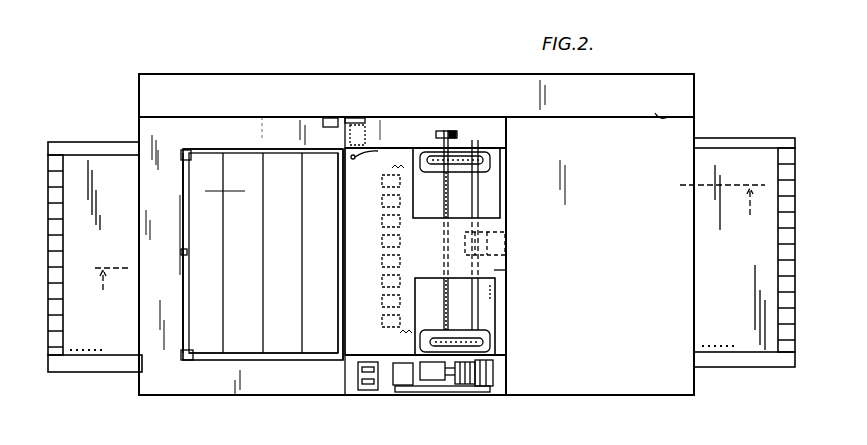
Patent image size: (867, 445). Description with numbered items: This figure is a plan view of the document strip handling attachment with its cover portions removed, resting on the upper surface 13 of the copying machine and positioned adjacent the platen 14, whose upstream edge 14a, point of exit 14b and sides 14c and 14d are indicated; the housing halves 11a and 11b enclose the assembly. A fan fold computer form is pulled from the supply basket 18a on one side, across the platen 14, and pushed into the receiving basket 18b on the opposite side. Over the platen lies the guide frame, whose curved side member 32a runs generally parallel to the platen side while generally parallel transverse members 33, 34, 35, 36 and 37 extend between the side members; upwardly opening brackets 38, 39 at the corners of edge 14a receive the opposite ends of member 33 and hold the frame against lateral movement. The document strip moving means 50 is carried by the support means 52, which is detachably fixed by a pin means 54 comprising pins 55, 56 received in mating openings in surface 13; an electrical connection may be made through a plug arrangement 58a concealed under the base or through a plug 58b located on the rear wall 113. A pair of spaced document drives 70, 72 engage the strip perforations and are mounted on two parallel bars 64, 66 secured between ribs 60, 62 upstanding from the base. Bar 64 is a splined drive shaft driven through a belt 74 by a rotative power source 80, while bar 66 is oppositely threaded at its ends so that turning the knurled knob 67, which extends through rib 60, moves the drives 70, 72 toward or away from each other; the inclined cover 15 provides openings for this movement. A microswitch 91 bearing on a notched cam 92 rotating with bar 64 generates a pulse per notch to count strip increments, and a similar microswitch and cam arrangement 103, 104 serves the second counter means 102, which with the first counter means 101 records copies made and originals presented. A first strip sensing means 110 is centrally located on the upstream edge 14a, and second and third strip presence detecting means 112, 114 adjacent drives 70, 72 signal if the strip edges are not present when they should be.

The upper housing portion 11a is at (416, 234).
The lower housing portion 11b is at (575, 322).
The upper surface 13 is at (672, 370).
The platen 14 is at (292, 249).
The upstream edge 14a is at (183, 196).
The point of exit 14b is at (332, 178).
The platen side 14c is at (262, 117).
The platen side 14d is at (245, 352).
The cover 15 is at (427, 256).
The supply basket 18a is at (78, 372).
The basket 18b is at (714, 367).
The side member 32a is at (230, 117).
The transverse member 33 is at (185, 316).
The transverse member 34 is at (223, 340).
The transverse member 35 is at (263, 340).
The transverse member 36 is at (302, 340).
The transverse member 37 is at (340, 340).
The bracket 38 is at (181, 156).
The bracket 39 is at (181, 353).
The document strip moving means 50 is at (507, 273).
The support means 52 is at (505, 245).
The pin means 54 is at (383, 124).
The pin 55 is at (391, 152).
The pin 56 is at (352, 342).
The electrical plug arrangement 58a is at (356, 117).
The electrical plug 58b is at (330, 117).
The rib 60 is at (504, 152).
The rib 62 is at (497, 350).
The bar 64 is at (495, 206).
The bar 66 is at (497, 198).
The knurled knob 67 is at (452, 132).
The document drive 70 is at (490, 162).
The document drive 72 is at (490, 344).
The belt 74 is at (505, 385).
The rotative power source 80 is at (396, 375).
The microswitch 91 is at (428, 364).
The notched cam 92 is at (505, 372).
The first counter means 101 is at (507, 268).
The second counter means 102 is at (507, 238).
The microswitch 103 is at (435, 375).
The cam 104 is at (465, 376).
The first strip sensing means 110 is at (181, 253).
The second strip presence detecting means 112 is at (423, 140).
The rear wall 113 is at (668, 115).
The third strip presence detecting means 114 is at (507, 300).